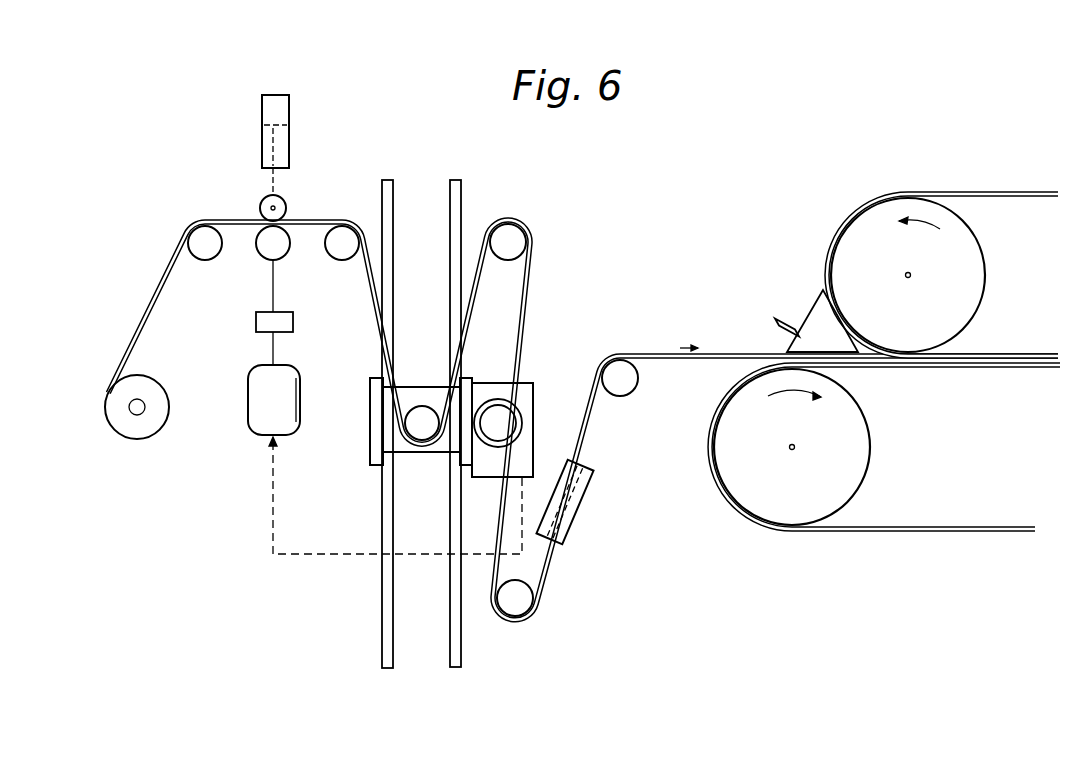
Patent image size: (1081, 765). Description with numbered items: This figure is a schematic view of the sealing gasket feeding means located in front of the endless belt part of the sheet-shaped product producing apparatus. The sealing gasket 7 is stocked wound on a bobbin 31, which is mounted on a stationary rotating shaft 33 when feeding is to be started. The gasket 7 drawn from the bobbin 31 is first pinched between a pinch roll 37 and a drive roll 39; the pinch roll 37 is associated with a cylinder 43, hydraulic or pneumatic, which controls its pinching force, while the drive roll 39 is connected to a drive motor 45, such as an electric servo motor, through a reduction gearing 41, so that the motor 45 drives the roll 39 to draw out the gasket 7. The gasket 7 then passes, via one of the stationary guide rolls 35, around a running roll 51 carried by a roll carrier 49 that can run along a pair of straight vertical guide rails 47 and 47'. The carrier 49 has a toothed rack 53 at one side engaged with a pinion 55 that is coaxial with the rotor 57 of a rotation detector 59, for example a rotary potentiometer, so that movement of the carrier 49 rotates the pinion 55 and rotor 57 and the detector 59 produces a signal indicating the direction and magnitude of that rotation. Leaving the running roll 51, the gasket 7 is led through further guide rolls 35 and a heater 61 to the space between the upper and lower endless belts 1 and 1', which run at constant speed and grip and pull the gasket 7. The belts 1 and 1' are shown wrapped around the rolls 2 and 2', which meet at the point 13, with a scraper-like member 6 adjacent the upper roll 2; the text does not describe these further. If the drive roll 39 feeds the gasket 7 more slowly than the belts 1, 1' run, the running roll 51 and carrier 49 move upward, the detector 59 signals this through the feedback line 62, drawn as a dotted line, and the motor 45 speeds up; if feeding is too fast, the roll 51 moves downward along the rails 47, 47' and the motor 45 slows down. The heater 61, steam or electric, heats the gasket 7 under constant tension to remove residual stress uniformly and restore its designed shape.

The upper endless belt 1 is at (942, 258).
The lower endless belt 1' is at (885, 466).
The upper roll 2 is at (918, 275).
The lower roll 2' is at (806, 447).
The doctor blade 6 is at (808, 305).
The sealing gasket 7 is at (158, 303).
The nip 13 is at (878, 359).
The bobbin 31 is at (122, 433).
The stationary rotating shaft 33 is at (146, 407).
The stationary guide rolls 35 is at (196, 240).
The pinch roll 37 is at (286, 207).
The drive roll 39 is at (280, 252).
The reduction gearing 41 is at (293, 325).
The cylinder 43 is at (289, 113).
The drive motor 45 is at (297, 425).
The vertical guide rail 47 is at (402, 408).
The vertical guide rail 47' is at (473, 407).
The roll carrier 49 is at (376, 439).
The running roll 51 is at (418, 410).
The toothed rack 53 is at (464, 470).
The pinion 55 is at (510, 428).
The rotor 57 is at (496, 412).
The rotation detector 59 is at (532, 393).
The heater 61 is at (582, 516).
The feedback line 62 is at (311, 556).